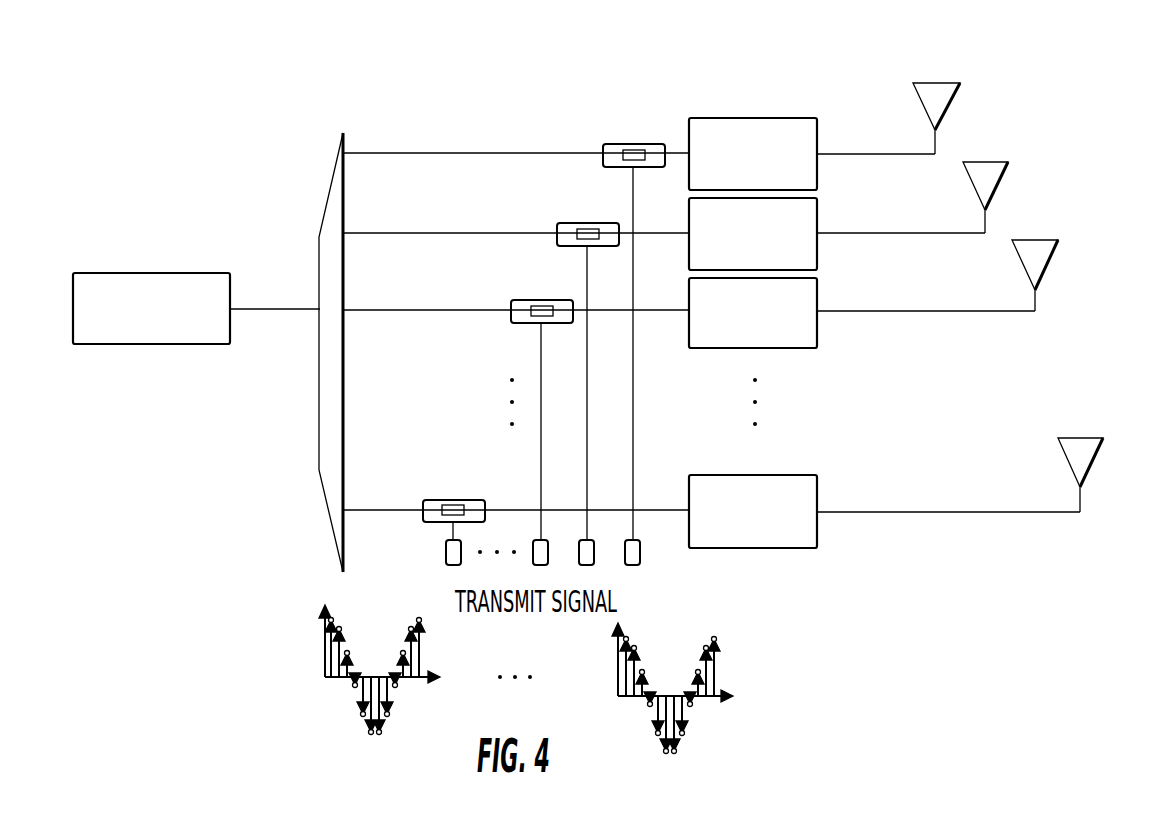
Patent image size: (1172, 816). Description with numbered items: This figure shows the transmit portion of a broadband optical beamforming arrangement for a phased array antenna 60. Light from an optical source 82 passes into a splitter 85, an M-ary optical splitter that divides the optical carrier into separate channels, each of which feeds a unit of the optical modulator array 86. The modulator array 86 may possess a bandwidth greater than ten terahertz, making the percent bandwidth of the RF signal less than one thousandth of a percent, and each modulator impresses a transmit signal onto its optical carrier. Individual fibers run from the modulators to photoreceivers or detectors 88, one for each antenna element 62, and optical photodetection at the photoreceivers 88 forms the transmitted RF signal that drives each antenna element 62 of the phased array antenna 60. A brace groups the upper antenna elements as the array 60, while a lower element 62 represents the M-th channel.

The phased array antenna 60 is at (903, 77).
The antenna element 62 is at (1090, 438).
The optical source 82 is at (213, 273).
The splitter 85 is at (319, 352).
The optical modulator array 86 is at (438, 362).
The photoreceiver 88 is at (748, 118).